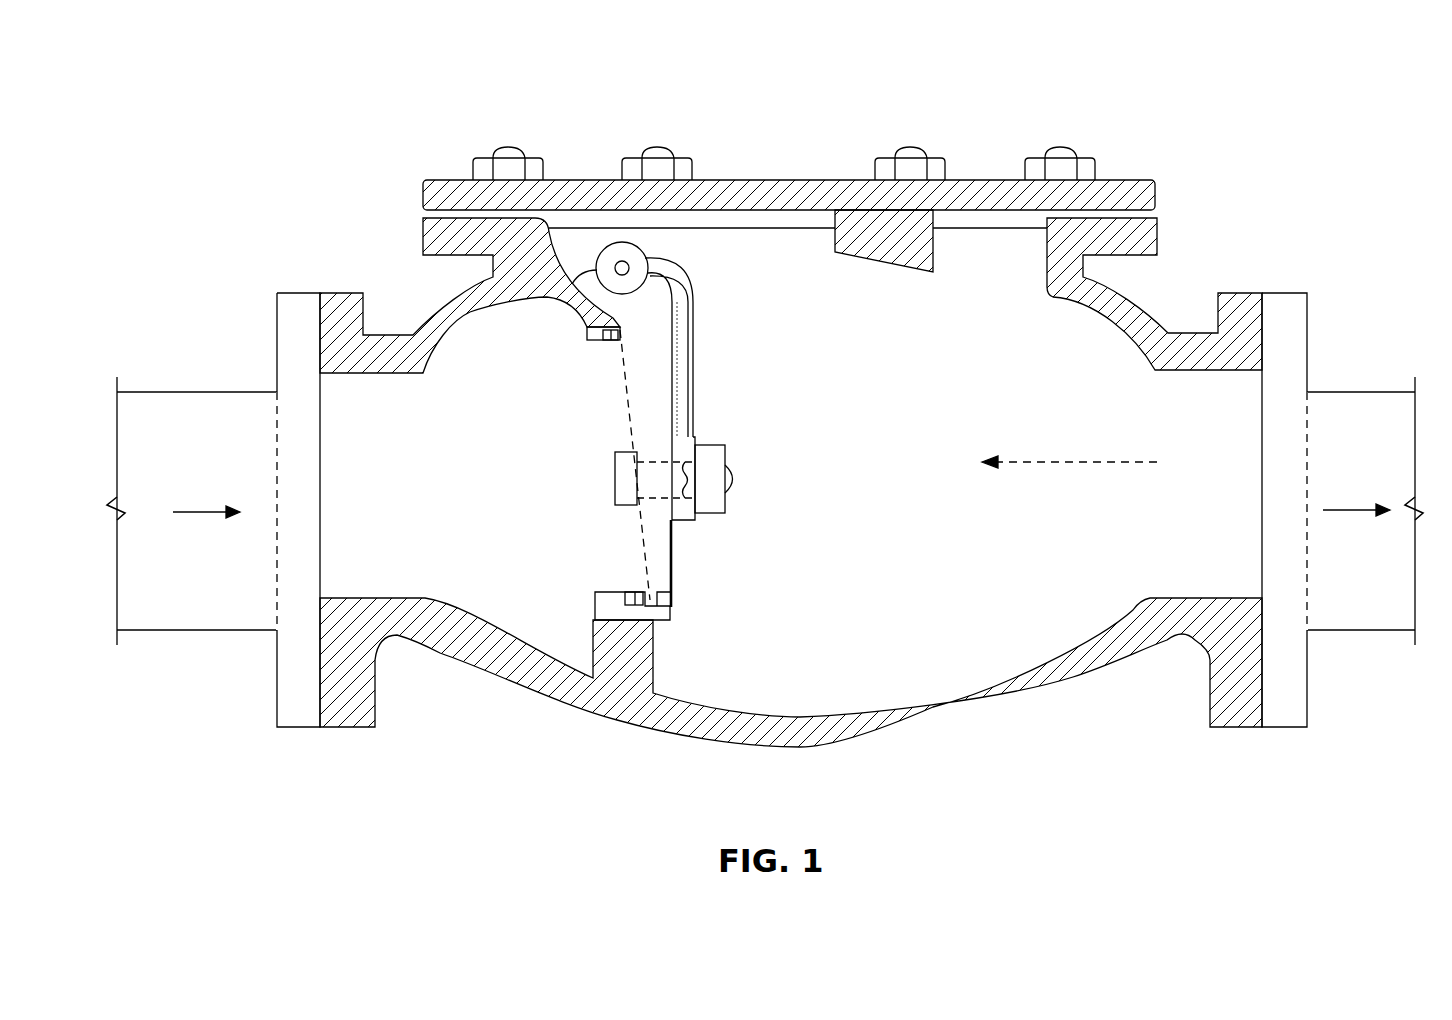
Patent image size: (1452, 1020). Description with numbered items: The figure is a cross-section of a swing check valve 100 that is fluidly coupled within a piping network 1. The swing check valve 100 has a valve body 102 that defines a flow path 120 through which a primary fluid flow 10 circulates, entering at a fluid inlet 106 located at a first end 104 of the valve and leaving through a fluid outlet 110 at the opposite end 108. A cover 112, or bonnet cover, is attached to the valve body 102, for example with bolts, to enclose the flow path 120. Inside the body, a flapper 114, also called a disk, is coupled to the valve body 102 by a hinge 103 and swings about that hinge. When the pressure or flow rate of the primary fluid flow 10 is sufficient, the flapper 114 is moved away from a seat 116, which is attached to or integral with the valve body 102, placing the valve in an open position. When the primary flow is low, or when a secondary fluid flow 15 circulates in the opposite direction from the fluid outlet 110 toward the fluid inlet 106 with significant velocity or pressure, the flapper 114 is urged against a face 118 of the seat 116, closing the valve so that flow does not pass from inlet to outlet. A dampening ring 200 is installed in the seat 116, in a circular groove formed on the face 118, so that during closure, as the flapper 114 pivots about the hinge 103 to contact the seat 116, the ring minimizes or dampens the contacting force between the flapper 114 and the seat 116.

The swing check valve 100 is at (160, 112).
The piping network 1 is at (185, 382).
The primary fluid flow 10 is at (208, 512).
The secondary fluid flow 15 is at (1072, 465).
The valve body 102 is at (1070, 700).
The hinge 103 is at (626, 265).
The first end 104 is at (317, 283).
The fluid inlet 106 is at (342, 376).
The outlet flange 108 is at (1265, 283).
The fluid outlet 110 is at (1240, 374).
The cover 112 is at (988, 178).
The flapper 114 is at (684, 540).
The seat 116 is at (583, 606).
The face 118 is at (626, 330).
The flow path 120 is at (836, 491).
The dampening ring 200 is at (606, 338).